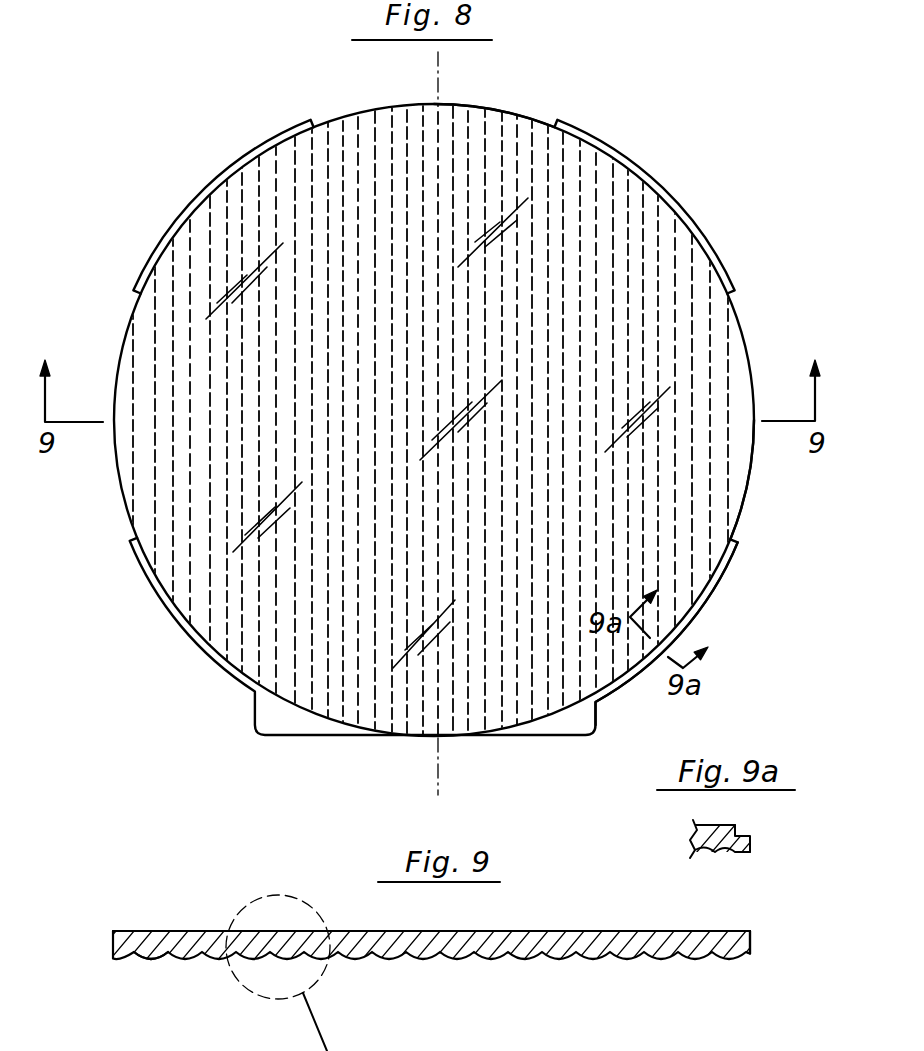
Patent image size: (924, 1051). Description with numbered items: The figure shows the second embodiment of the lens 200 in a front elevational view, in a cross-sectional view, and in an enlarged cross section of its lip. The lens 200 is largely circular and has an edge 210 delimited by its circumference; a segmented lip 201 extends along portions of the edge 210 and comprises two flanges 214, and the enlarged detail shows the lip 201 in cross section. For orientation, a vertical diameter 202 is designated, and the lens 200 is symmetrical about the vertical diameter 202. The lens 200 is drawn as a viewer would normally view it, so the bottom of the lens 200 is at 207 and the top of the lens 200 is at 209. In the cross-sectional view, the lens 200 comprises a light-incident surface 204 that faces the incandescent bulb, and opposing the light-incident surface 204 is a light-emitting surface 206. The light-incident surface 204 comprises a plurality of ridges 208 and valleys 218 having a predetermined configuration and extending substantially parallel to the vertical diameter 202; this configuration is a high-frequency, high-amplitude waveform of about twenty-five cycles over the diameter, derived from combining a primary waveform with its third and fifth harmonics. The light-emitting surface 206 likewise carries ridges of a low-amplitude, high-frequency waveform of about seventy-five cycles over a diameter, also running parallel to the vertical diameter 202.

In FIG. 8, the lens 200 is at (677, 167).
In FIG. 9, the lens 200 is at (163, 918).
In FIG. 9A, the lens 200 is at (717, 850).
In FIG. 8, the segmented lip 201 is at (267, 150).
In FIG. 9A, the segmented lip 201 is at (745, 843).
In FIG. 8, the vertical diameter 202 is at (440, 772).
In FIG. 9, the light-incident surface 204 is at (418, 960).
In FIG. 8, the light-emitting surface 206 is at (253, 223).
In FIG. 9, the light-emitting surface 206 is at (542, 930).
In FIG. 8, the bottom of the lens 207 is at (392, 736).
In FIG. 8, the ridges 208 is at (227, 612).
In FIG. 9, the ridges 208 is at (578, 958).
In FIG. 8, the top of the lens 209 is at (517, 117).
In FIG. 8, the edge 210 is at (742, 500).
In FIG. 9, the edge 210 is at (750, 945).
In FIG. 8, the flanges 214 is at (575, 722).
In FIG. 9, the valleys 218 is at (172, 957).